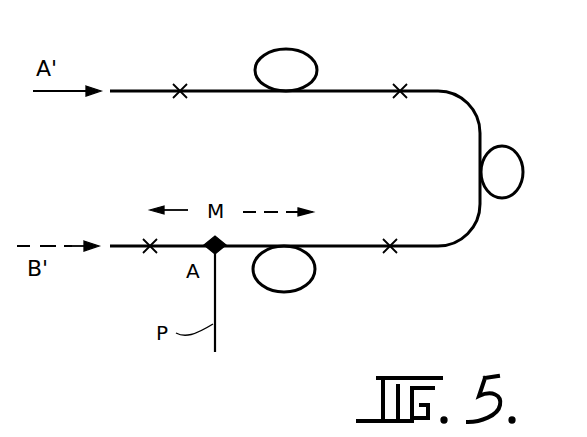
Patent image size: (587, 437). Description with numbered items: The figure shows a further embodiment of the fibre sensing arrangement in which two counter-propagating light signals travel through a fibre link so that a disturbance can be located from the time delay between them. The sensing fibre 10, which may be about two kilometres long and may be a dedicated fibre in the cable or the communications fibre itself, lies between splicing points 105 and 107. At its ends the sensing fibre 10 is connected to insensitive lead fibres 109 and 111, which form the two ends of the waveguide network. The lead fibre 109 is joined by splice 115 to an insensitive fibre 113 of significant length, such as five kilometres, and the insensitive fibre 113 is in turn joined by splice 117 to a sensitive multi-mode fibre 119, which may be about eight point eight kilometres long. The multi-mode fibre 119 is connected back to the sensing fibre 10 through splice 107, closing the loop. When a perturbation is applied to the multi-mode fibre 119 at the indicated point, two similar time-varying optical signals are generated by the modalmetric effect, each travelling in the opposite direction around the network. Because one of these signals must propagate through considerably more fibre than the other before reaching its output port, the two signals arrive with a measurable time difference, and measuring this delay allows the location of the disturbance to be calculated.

The sensing fibre 10 is at (317, 187).
The splicing point 105 is at (147, 255).
The splice 107 is at (390, 258).
The lead fibre 109 is at (140, 90).
The lead fibre 111 is at (125, 243).
The insensitive fibre 113 is at (348, 90).
The splice 115 is at (180, 100).
The splice 117 is at (401, 100).
The sensitive multi-mode fibre 119 is at (480, 122).